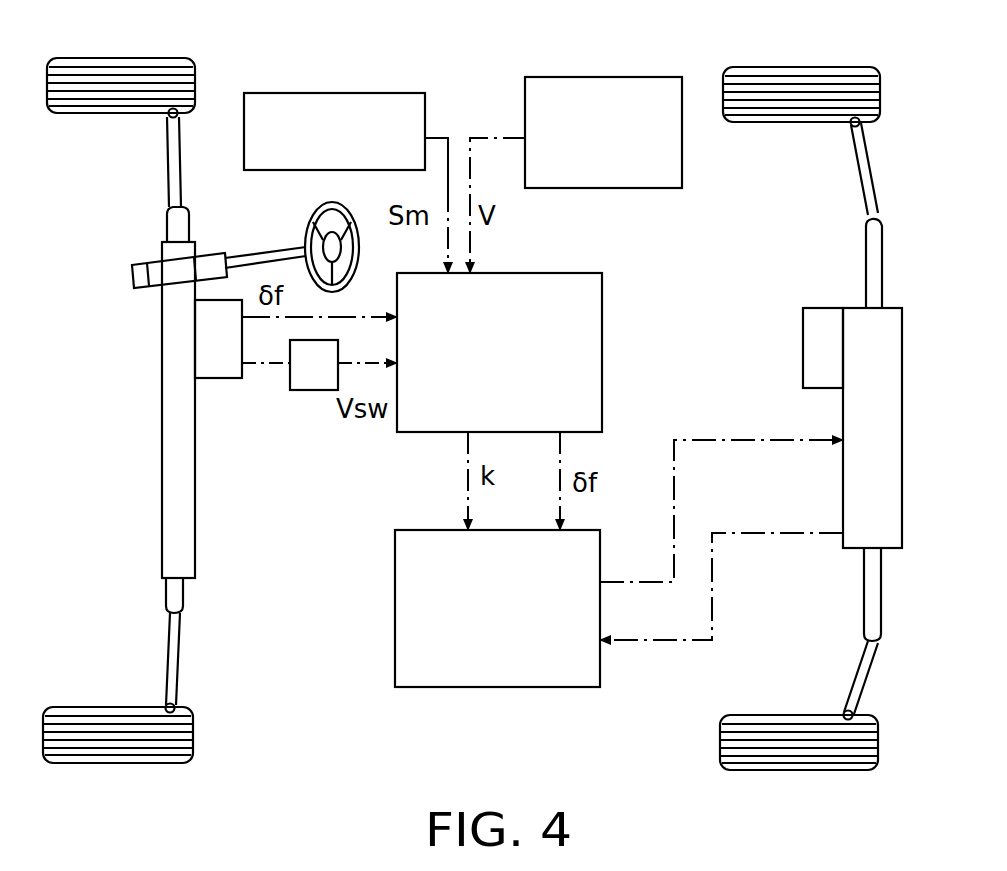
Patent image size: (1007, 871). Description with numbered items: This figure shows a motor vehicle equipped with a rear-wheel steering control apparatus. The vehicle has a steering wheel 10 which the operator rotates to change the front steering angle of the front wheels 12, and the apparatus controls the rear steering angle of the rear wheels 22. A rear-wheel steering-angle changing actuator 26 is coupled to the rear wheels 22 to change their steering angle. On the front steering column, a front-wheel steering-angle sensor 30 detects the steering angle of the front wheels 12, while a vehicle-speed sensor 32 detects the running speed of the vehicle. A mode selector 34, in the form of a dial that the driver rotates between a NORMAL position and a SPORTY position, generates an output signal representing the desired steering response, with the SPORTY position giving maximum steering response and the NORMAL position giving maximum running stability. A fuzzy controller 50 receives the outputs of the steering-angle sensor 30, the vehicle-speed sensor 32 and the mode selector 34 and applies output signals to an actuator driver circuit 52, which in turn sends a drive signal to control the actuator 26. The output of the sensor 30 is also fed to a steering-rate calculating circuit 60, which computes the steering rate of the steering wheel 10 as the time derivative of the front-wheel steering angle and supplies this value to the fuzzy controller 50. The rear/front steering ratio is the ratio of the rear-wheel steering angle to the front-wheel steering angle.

The steering wheel 10 is at (310, 224).
The front wheels 12 is at (130, 68).
The rear wheels 22 is at (795, 77).
The rear-wheel steering-angle changing actuator 26 is at (843, 418).
The front-wheel steering-angle sensor 30 is at (210, 325).
The vehicle-speed sensor 32 is at (604, 77).
The mode selector 34 is at (343, 93).
The fuzzy controller 50 is at (602, 383).
The actuator driver circuit 52 is at (499, 687).
The steering-rate calculating circuit 60 is at (307, 391).